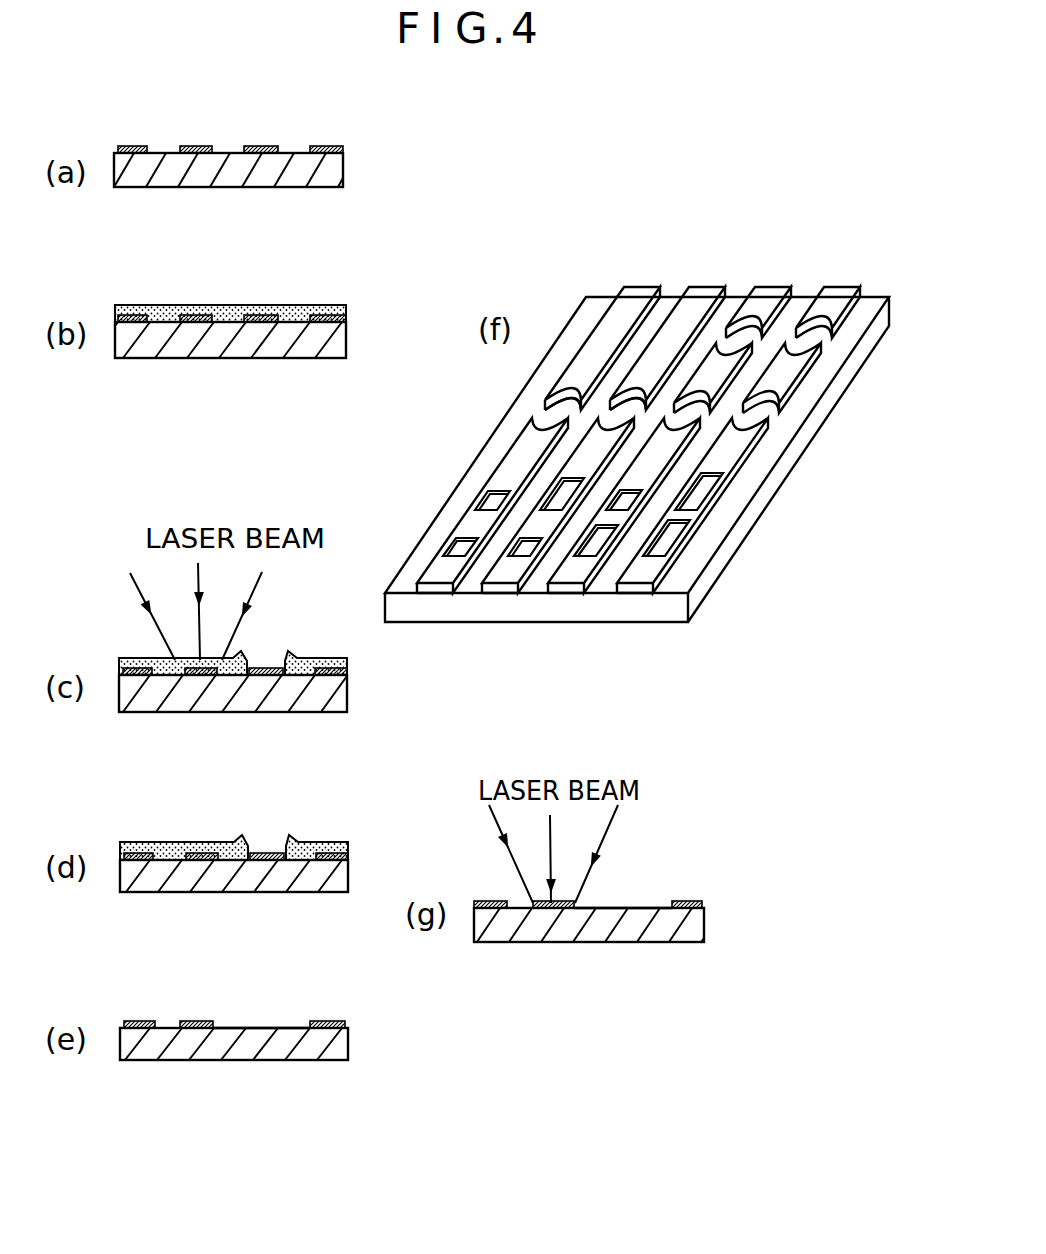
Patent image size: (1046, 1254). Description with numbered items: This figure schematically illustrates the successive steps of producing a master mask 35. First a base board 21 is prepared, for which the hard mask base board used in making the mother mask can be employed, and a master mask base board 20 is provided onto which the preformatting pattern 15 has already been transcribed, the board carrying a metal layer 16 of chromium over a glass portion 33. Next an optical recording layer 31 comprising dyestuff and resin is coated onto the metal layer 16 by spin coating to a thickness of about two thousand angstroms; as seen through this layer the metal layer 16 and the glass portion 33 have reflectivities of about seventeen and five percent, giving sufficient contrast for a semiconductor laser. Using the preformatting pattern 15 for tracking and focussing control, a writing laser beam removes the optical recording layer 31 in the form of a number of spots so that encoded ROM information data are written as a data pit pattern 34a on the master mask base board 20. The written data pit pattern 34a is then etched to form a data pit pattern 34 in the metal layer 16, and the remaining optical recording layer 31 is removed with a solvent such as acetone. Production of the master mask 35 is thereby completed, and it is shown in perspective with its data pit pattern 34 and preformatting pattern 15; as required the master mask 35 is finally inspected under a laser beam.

The preformatting pattern 15 is at (490, 500).
The metal layer 16 is at (330, 147).
The master mask base board 20 is at (303, 142).
The base board 21 is at (330, 172).
The optical recording layer 31 is at (242, 308).
The glass portion 33 is at (305, 316).
The data pit pattern 34 is at (262, 856).
The data pit pattern 34a is at (268, 660).
The master mask 35 is at (290, 1024).